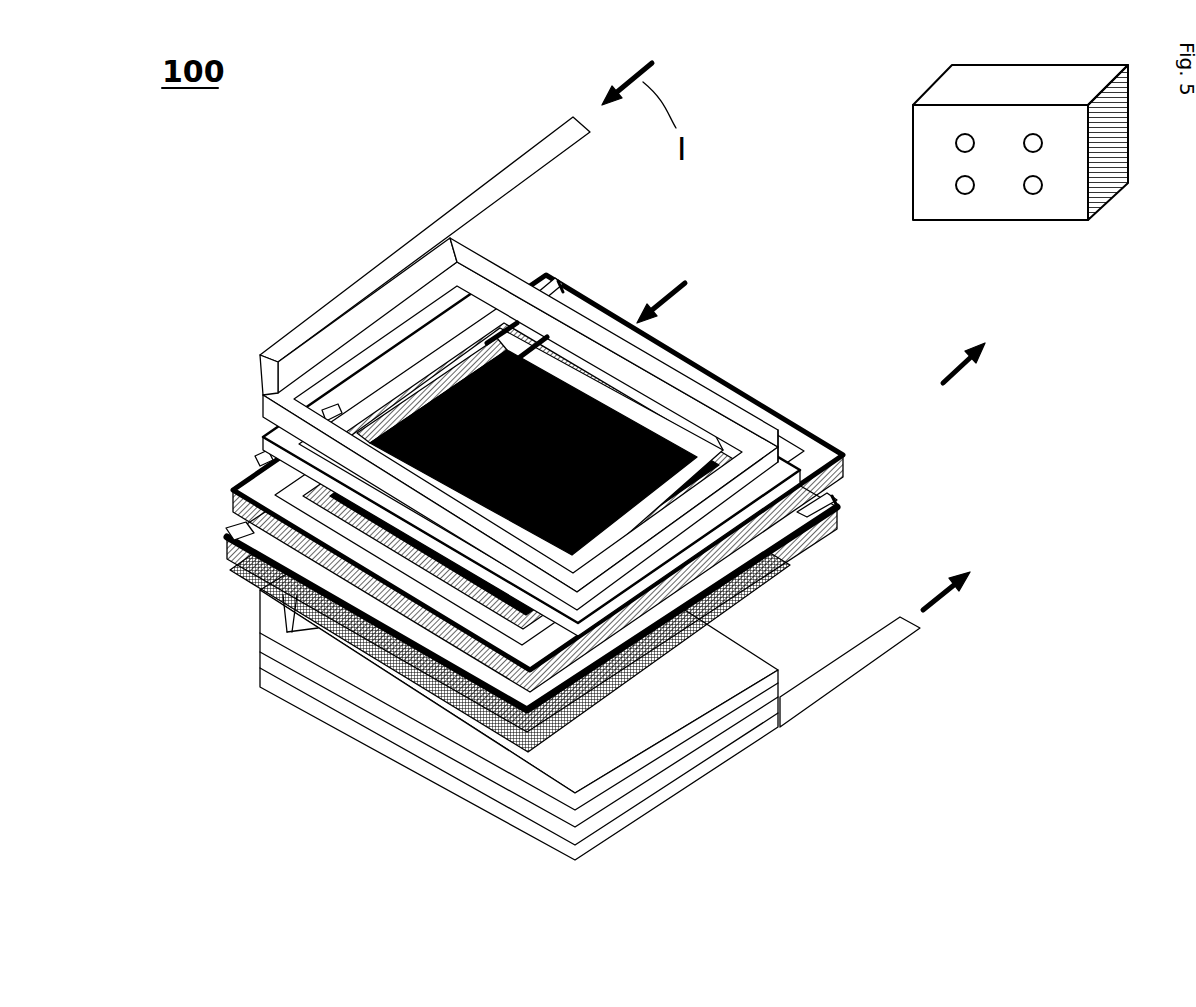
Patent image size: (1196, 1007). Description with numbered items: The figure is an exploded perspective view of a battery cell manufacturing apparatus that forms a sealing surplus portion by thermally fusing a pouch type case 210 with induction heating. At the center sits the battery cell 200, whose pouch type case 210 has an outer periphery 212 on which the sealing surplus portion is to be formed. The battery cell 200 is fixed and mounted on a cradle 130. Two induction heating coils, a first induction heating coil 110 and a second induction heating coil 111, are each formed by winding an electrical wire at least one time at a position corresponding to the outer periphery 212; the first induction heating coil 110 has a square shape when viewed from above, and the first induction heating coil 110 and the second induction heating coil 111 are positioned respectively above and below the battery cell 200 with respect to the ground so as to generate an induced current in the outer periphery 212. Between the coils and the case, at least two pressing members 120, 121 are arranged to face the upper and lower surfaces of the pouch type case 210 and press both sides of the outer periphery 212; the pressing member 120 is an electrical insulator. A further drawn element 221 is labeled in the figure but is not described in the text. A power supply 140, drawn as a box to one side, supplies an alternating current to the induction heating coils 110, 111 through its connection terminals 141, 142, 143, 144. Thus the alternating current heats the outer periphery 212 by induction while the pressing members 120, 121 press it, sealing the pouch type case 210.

The first induction heating coil 110 is at (262, 352).
The second induction heating coil 111 is at (262, 634).
The pressing member 120 is at (252, 463).
The pressing member 121 is at (227, 524).
The cradle 130 is at (790, 567).
The power supply 140 is at (978, 167).
The connection terminal 141 is at (960, 137).
The connection terminal 142 is at (960, 183).
The connection terminal 143 is at (1038, 145).
The connection terminal 144 is at (1038, 187).
The battery cell 200 is at (550, 447).
The pouch type case 210 is at (610, 422).
The outer periphery 212 is at (800, 506).
The second electrode 221 is at (263, 447).